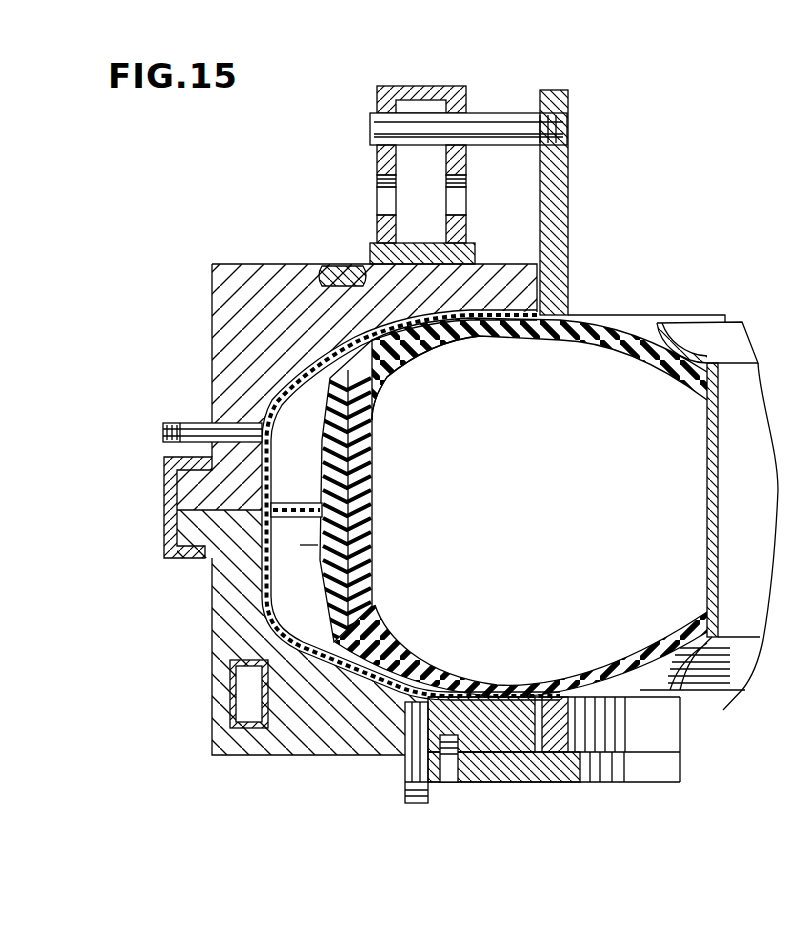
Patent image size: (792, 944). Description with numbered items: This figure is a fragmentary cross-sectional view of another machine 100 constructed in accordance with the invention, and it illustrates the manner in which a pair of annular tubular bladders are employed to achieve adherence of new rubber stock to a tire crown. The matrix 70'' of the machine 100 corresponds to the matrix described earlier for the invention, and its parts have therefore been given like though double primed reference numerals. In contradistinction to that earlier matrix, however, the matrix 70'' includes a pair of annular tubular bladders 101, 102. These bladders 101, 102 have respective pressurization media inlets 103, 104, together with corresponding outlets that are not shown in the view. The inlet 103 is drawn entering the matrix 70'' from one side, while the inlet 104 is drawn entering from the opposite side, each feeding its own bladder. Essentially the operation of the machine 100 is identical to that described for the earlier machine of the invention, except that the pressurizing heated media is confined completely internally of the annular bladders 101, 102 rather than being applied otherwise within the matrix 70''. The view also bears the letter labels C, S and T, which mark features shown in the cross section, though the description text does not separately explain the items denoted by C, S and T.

The machine 100 is at (396, 472).
The matrix 70'' is at (396, 472).
The annular tubular bladder 101 is at (350, 418).
The annular tubular bladder 102 is at (300, 590).
The pressurization media inlet 103 is at (182, 432).
The pressurization media inlet 104 is at (405, 782).
The connector C is at (358, 494).
The space S is at (350, 553).
The tire T is at (620, 330).